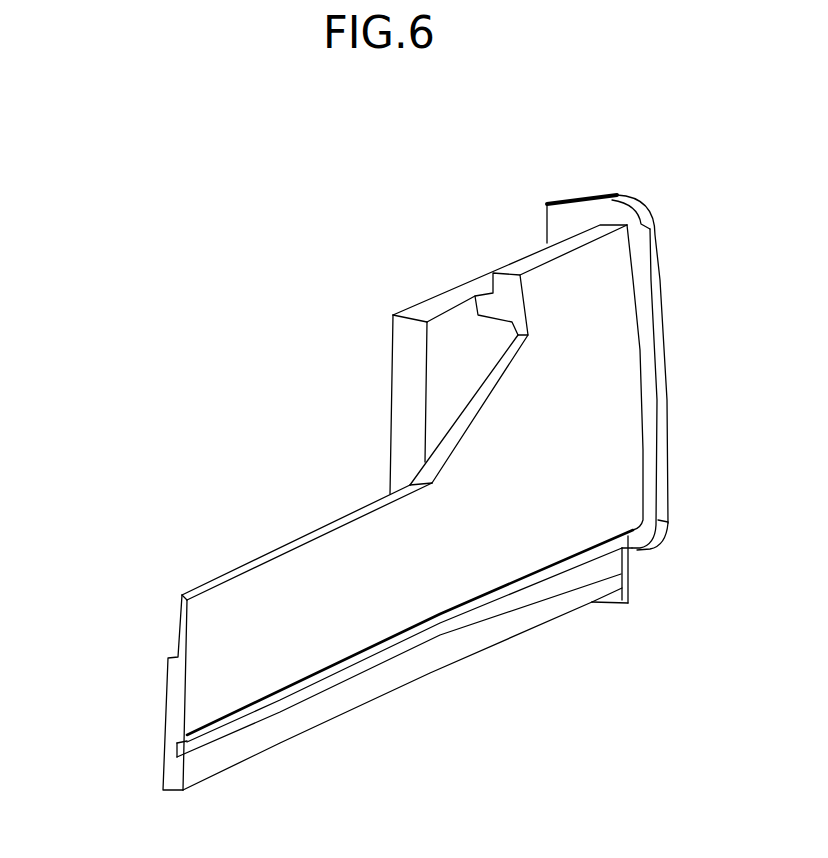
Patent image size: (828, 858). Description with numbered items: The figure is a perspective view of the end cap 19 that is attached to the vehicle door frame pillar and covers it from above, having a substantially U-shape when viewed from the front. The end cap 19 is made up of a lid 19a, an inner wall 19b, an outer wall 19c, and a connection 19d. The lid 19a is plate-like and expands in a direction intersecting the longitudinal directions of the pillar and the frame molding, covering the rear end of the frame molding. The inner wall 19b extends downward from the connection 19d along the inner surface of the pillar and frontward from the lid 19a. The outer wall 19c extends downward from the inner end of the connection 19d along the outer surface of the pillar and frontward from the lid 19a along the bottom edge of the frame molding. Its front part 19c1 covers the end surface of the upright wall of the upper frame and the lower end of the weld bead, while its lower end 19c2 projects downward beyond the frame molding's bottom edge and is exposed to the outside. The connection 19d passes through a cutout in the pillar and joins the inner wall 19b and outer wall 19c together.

The end cap 19 is at (604, 122).
The lid 19a is at (605, 213).
The inner wall 19b is at (423, 307).
The outer wall 19c is at (500, 548).
The front part of the outer wall 19c1 is at (176, 712).
The lower end of the outer wall 19c2 is at (342, 717).
The connection 19d is at (493, 307).